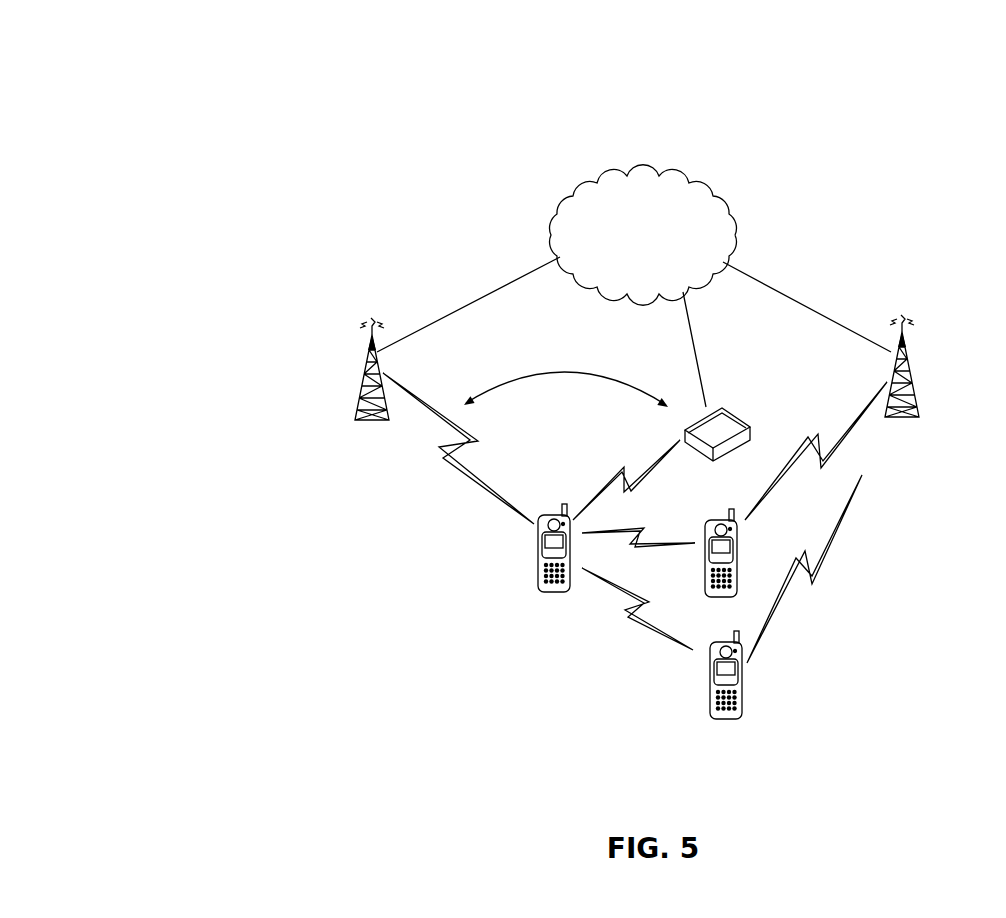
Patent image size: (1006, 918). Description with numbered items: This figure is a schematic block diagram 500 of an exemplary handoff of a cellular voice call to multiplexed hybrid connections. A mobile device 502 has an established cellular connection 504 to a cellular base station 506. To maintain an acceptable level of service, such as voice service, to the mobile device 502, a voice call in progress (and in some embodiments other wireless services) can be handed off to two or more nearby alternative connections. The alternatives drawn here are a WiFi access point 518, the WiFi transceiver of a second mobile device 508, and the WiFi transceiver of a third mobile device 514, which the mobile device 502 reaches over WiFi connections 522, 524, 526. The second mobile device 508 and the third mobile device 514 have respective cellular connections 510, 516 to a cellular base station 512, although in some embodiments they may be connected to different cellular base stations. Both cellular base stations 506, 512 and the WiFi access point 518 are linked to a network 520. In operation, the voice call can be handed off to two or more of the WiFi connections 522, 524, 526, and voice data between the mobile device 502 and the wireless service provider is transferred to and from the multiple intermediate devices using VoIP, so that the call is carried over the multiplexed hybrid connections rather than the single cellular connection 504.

The schematic block diagram 500 is at (137, 44).
The mobile device 502 is at (532, 566).
The cellular connection 504 is at (477, 473).
The cellular base station 506 is at (368, 366).
The second mobile device 508 is at (710, 697).
The cellular connection 510 is at (836, 532).
The cellular base station 512 is at (913, 392).
The third mobile device 514 is at (718, 596).
The cellular connection 516 is at (838, 437).
The WiFi access point 518 is at (732, 407).
The network 520 is at (567, 205).
The WiFi connection 522 is at (657, 462).
The WiFi connection 524 is at (648, 537).
The WiFi connection 526 is at (620, 598).